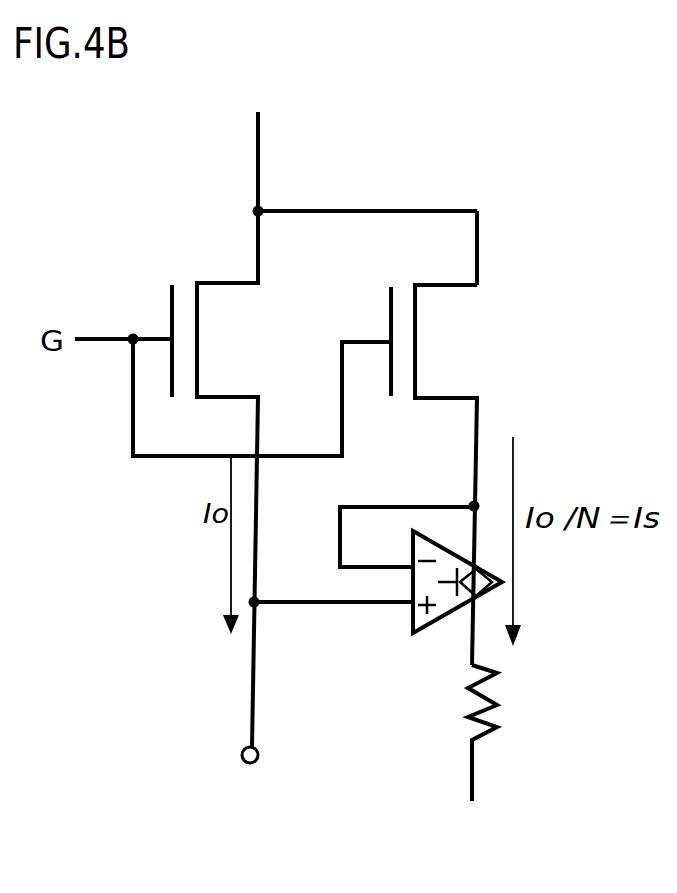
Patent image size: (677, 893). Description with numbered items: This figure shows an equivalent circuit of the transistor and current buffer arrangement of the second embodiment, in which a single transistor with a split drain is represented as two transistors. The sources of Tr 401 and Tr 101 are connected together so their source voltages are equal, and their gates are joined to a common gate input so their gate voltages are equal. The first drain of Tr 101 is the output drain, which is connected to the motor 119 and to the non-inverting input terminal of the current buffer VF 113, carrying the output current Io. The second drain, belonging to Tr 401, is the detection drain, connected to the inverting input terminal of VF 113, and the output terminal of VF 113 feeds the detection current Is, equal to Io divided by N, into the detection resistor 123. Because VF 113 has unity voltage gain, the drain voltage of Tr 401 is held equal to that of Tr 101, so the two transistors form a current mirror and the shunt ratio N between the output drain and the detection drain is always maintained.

The transistor Tr 101 is at (170, 279).
The transistor Tr 401 is at (493, 292).
The current buffer circuit VF 113 is at (427, 630).
The motor 119 is at (257, 778).
The detection resistor 123 is at (522, 707).